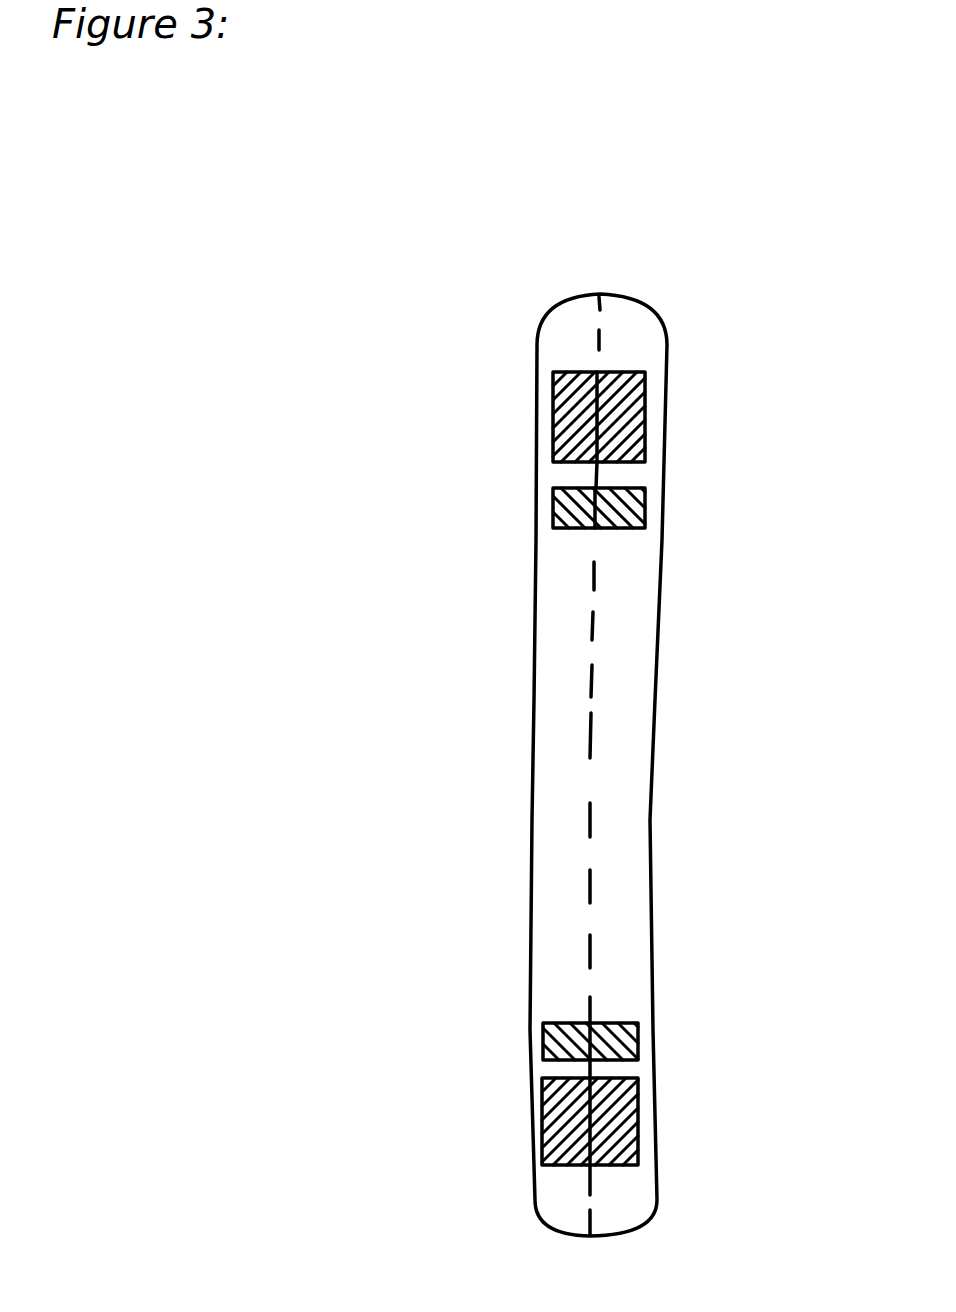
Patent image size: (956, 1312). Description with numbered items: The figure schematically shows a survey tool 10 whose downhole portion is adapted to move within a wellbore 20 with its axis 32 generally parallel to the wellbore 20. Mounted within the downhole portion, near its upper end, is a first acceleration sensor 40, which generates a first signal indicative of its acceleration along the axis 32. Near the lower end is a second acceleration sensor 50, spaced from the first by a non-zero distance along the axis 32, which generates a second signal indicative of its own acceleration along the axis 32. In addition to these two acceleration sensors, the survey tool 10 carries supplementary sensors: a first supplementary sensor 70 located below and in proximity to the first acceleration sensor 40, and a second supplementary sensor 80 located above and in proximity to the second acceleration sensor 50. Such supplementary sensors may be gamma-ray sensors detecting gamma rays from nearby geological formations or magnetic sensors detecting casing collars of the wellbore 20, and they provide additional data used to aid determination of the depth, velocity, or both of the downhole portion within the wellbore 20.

The survey tool 10 is at (826, 176).
The wellbore 20 is at (655, 312).
The axis 32 is at (597, 622).
The first acceleration sensor 40 is at (645, 427).
The first supplementary sensor 70 is at (645, 502).
The second supplementary sensor 80 is at (638, 1038).
The second acceleration sensor 50 is at (638, 1122).